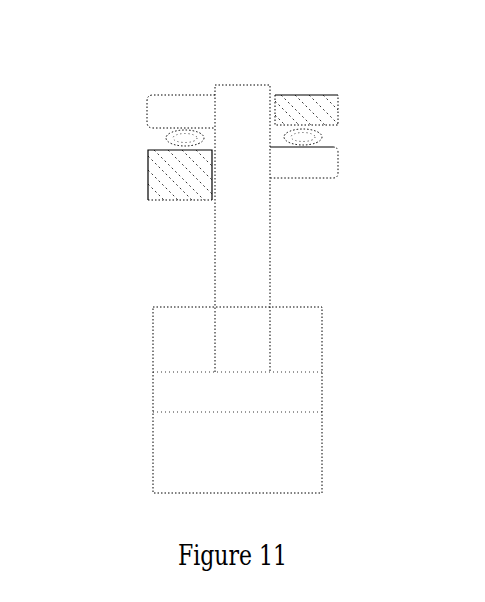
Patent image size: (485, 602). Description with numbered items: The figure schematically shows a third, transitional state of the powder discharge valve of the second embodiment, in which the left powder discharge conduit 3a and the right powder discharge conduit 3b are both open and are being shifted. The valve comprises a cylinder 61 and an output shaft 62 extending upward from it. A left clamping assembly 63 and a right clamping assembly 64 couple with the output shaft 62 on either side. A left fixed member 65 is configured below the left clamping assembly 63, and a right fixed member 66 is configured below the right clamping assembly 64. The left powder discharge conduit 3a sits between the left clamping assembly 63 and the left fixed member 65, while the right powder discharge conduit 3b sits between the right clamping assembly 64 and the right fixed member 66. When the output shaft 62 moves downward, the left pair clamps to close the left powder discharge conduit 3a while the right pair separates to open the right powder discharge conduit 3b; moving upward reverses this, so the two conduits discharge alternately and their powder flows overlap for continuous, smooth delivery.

The cylinder 61 is at (168, 343).
The output shaft 62 is at (267, 283).
The left clamping assembly 63 is at (185, 105).
The right clamping assembly 64 is at (328, 175).
The left fixed member 65 is at (163, 183).
The right fixed member 66 is at (303, 135).
The left powder discharge conduit 3a is at (168, 141).
The right powder discharge conduit 3b is at (338, 107).